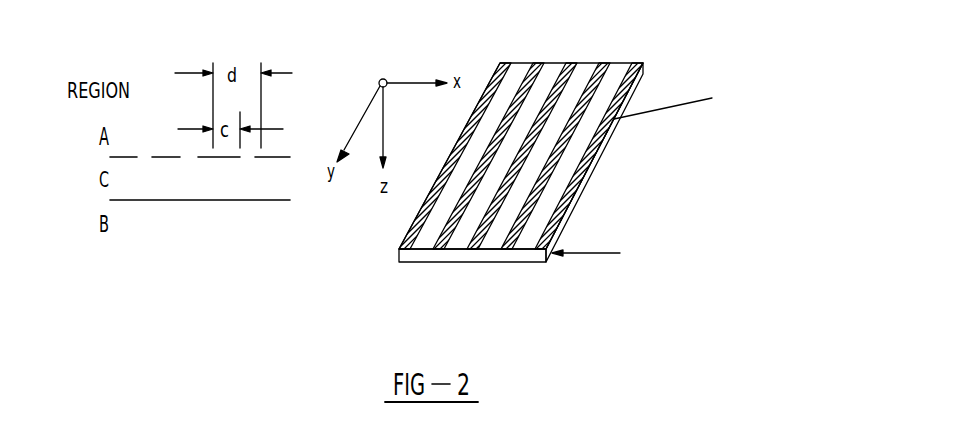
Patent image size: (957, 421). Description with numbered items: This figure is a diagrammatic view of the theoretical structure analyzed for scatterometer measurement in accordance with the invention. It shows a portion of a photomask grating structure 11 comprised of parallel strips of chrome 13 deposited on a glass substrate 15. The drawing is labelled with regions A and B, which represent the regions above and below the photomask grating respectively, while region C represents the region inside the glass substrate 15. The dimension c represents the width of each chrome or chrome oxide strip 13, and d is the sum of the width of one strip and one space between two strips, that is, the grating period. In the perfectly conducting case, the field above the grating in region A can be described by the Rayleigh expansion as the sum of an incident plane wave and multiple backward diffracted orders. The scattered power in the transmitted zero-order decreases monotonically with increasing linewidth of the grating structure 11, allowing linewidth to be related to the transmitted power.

The photomask grating structure 11 is at (492, 268).
The strips of chrome 13 is at (643, 62).
The glass substrate 15 is at (587, 183).